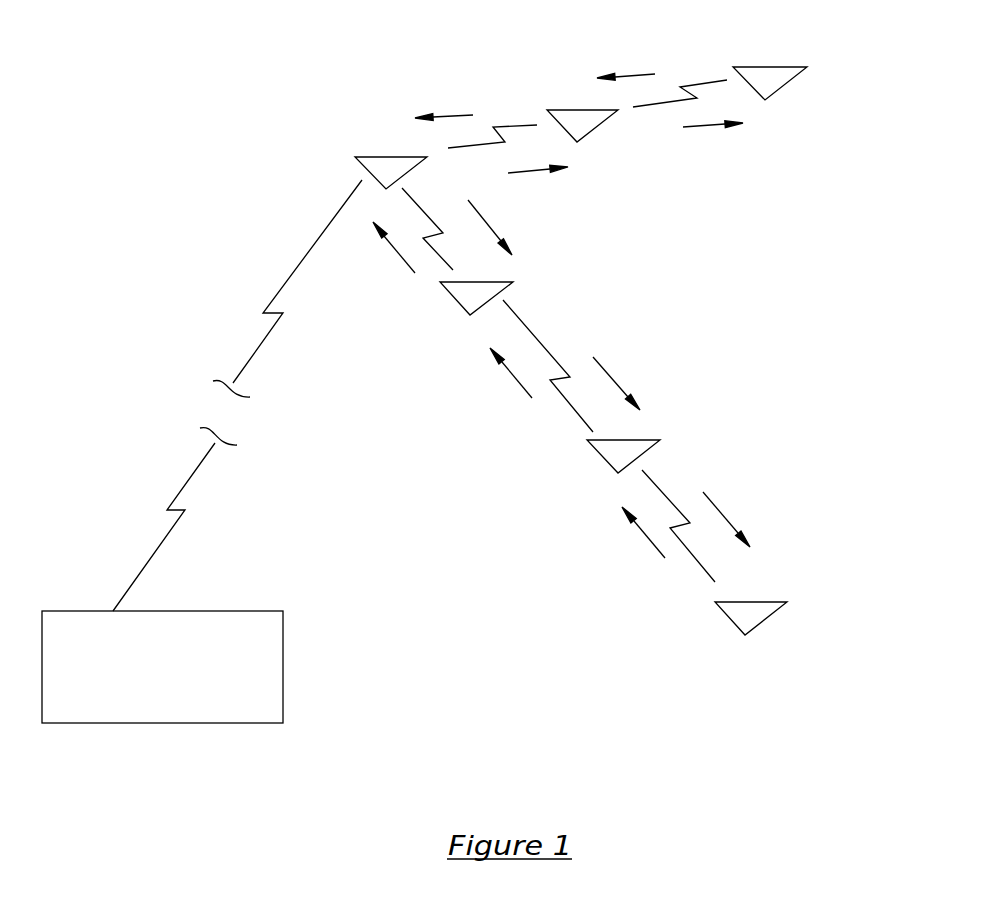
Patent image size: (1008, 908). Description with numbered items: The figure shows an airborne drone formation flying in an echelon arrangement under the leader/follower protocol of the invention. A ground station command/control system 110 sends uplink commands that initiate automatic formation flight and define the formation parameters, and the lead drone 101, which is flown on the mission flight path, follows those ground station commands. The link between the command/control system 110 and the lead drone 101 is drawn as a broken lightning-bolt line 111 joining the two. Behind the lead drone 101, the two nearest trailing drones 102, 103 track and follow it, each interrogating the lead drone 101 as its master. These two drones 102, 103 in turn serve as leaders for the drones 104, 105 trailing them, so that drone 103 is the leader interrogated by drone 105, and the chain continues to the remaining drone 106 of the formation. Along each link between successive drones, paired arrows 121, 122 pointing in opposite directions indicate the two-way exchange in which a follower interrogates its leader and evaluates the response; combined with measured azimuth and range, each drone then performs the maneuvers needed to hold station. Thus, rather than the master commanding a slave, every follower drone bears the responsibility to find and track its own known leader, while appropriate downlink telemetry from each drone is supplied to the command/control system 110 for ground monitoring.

The lead drone 101 is at (388, 157).
The drone 102 is at (598, 127).
The drone 103 is at (512, 283).
The drone 104 is at (800, 67).
The drone 105 is at (660, 440).
The drone 106 is at (780, 602).
The command/control system 110 is at (283, 653).
The ground-to-satellite communication link 111 is at (237, 388).
The forward command path 121 is at (460, 110).
The return telemetry path 122 is at (710, 127).